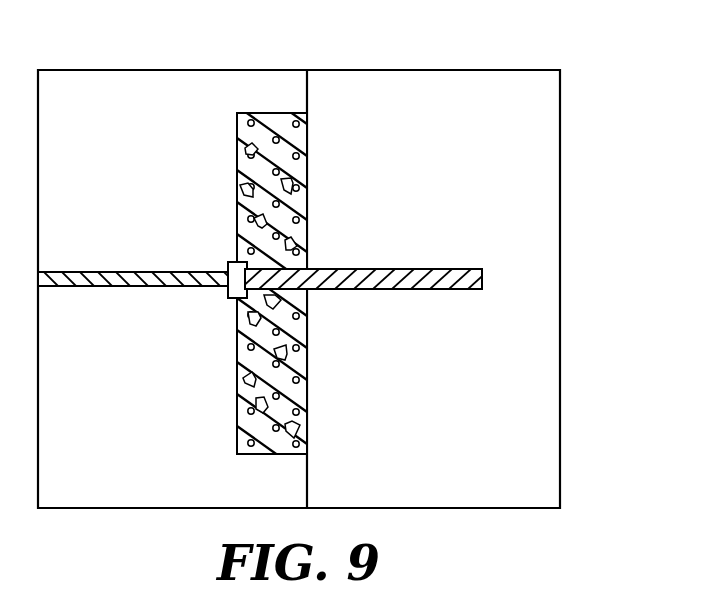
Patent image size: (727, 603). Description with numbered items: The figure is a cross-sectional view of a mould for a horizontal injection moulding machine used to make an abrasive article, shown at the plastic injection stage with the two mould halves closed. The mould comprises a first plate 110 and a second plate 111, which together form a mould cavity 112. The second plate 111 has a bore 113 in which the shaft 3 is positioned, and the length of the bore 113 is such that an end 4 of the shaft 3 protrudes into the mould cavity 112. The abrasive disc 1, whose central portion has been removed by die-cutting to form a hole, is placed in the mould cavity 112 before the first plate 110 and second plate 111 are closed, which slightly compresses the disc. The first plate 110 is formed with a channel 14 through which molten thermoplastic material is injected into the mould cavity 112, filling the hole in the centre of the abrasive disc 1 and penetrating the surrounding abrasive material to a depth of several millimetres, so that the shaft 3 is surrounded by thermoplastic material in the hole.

The abrasive disc 1 is at (250, 122).
The shaft 3 is at (457, 278).
The end of the shaft 4 is at (240, 266).
The channel 14 is at (105, 287).
The first plate 110 is at (113, 86).
The second plate 111 is at (535, 133).
The mould cavity 112 is at (250, 430).
The bore 113 is at (418, 268).